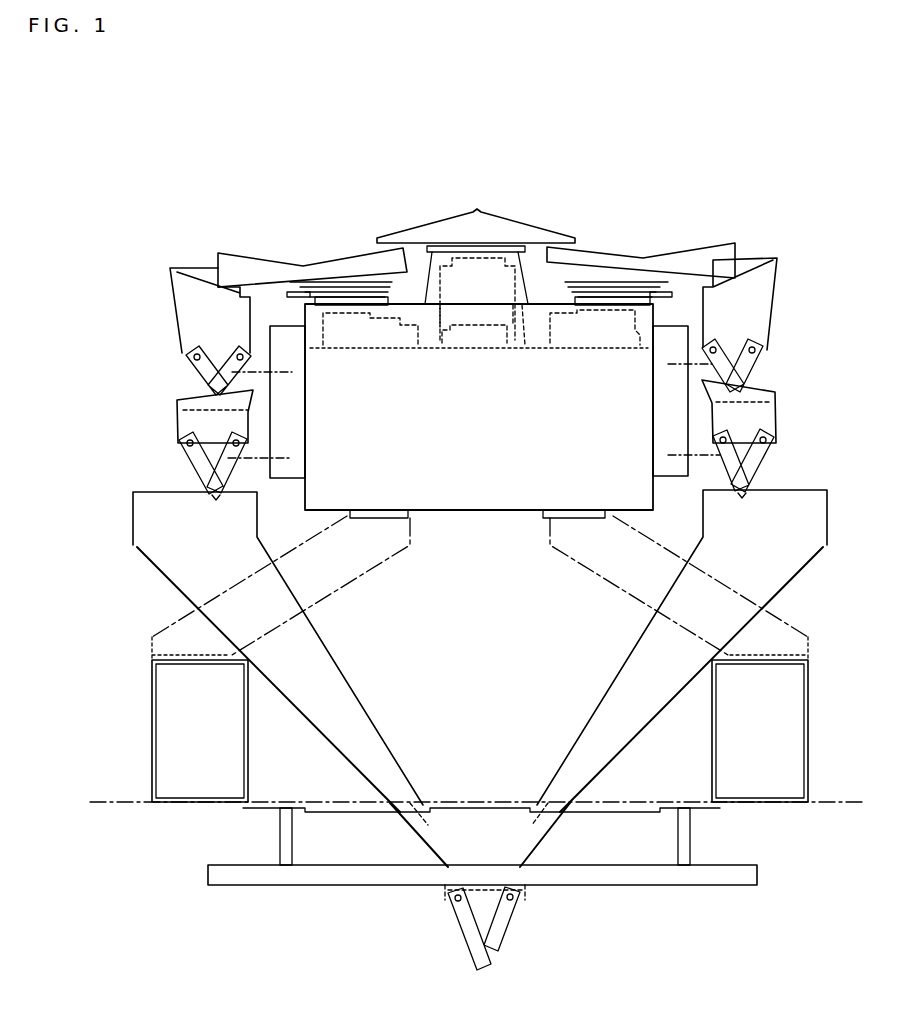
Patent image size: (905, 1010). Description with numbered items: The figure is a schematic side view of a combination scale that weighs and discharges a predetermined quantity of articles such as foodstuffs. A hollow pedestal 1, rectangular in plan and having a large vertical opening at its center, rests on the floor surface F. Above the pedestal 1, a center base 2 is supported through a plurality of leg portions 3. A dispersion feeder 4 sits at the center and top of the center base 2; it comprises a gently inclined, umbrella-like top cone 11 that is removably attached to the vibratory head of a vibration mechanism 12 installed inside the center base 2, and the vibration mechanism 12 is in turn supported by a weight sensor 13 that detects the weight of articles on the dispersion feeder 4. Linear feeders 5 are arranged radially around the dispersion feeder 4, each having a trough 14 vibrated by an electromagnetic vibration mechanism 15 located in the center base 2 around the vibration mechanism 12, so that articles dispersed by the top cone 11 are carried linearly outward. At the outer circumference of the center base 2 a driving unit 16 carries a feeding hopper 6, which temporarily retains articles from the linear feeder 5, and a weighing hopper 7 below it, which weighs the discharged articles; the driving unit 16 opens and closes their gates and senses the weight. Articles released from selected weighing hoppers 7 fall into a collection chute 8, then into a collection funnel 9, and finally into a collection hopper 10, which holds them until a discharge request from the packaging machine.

The hollow pedestal 1 is at (150, 680).
The center base 2 is at (464, 512).
The leg portions 3 is at (340, 587).
The dispersion feeder 4 is at (506, 218).
The linear feeder 5 is at (330, 248).
The feeding hopper 6 is at (178, 318).
The weighing hopper 7 is at (178, 424).
The collection chute 8 is at (170, 585).
The collection funnel 9 is at (428, 847).
The collection hopper 10 is at (485, 902).
The top cone 11 is at (431, 237).
The vibration mechanism 12 is at (525, 350).
The weight sensor 13 is at (433, 345).
The trough 14 is at (262, 260).
The electromagnetic vibration mechanism 15 is at (415, 352).
The driving unit 16 is at (293, 432).
The floor surface F is at (104, 800).